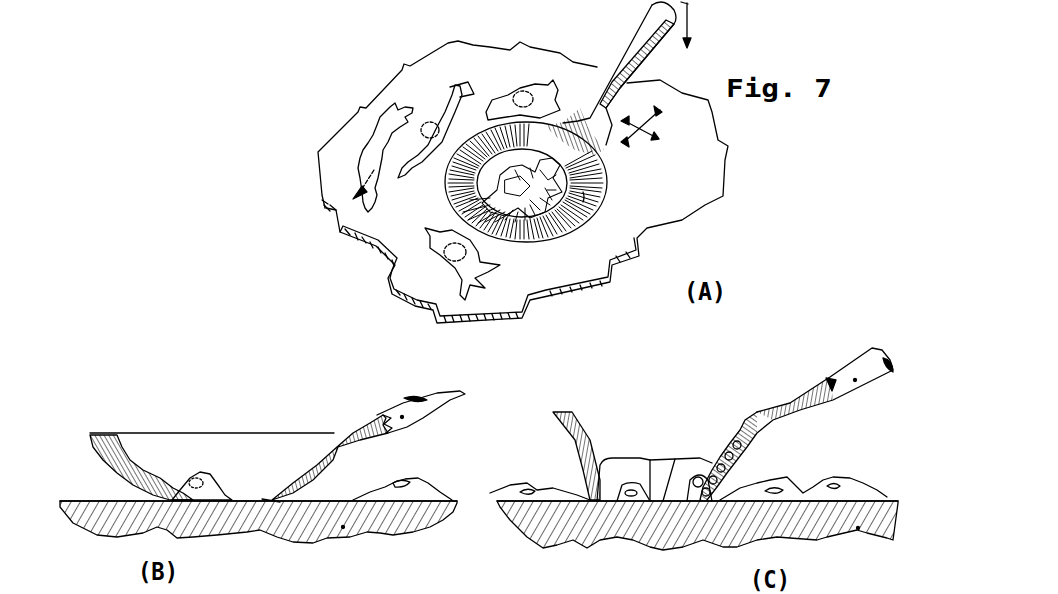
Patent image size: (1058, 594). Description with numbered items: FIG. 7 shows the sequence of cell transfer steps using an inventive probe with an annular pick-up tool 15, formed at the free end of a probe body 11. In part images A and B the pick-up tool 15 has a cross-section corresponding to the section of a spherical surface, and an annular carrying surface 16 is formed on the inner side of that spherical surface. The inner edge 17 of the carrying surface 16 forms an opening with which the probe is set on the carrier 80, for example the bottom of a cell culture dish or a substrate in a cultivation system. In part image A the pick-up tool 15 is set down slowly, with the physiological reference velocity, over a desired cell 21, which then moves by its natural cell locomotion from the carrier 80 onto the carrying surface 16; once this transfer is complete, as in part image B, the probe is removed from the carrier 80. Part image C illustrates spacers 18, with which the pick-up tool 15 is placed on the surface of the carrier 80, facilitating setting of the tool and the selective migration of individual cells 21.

The probe body 11 is at (632, 47).
The pick-up tool 15 is at (637, 171).
The carrying surface 16 is at (584, 197).
The inner edge 17 is at (272, 500).
The spacers 18 is at (587, 483).
The cell 21 is at (537, 225).
The carrier 80 is at (370, 227).